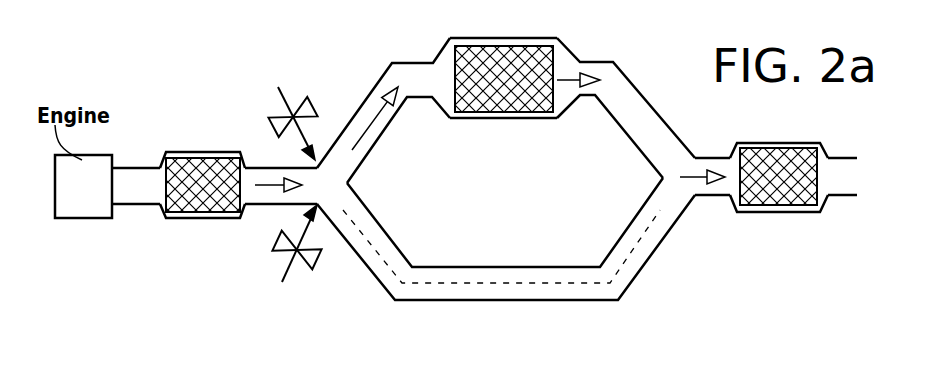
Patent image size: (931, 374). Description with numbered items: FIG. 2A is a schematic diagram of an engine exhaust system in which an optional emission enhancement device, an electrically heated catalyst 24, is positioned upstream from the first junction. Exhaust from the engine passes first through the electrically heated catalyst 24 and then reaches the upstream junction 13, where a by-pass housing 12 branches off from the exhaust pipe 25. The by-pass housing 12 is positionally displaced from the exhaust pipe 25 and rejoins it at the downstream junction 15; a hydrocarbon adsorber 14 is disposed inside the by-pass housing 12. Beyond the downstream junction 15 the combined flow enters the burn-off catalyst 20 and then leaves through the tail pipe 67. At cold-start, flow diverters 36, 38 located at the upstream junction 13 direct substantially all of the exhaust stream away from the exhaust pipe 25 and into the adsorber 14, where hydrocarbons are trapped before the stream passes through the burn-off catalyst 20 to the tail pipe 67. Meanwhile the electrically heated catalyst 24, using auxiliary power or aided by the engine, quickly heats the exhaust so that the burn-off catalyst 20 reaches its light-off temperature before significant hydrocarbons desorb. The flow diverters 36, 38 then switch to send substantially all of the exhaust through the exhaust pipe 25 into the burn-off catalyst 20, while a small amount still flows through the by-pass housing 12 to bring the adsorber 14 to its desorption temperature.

The by-pass housing 12 is at (360, 107).
The upstream junction 13 is at (340, 196).
The hydrocarbon adsorber 14 is at (512, 103).
The downstream junction 15 is at (683, 204).
The burn-off catalyst 20 is at (758, 193).
The electrically heated catalyst 24 is at (182, 205).
The exhaust pipe 25 is at (473, 302).
The flow diverter 36 is at (281, 106).
The flow diverter 38 is at (287, 261).
The tail pipe 67 is at (842, 195).